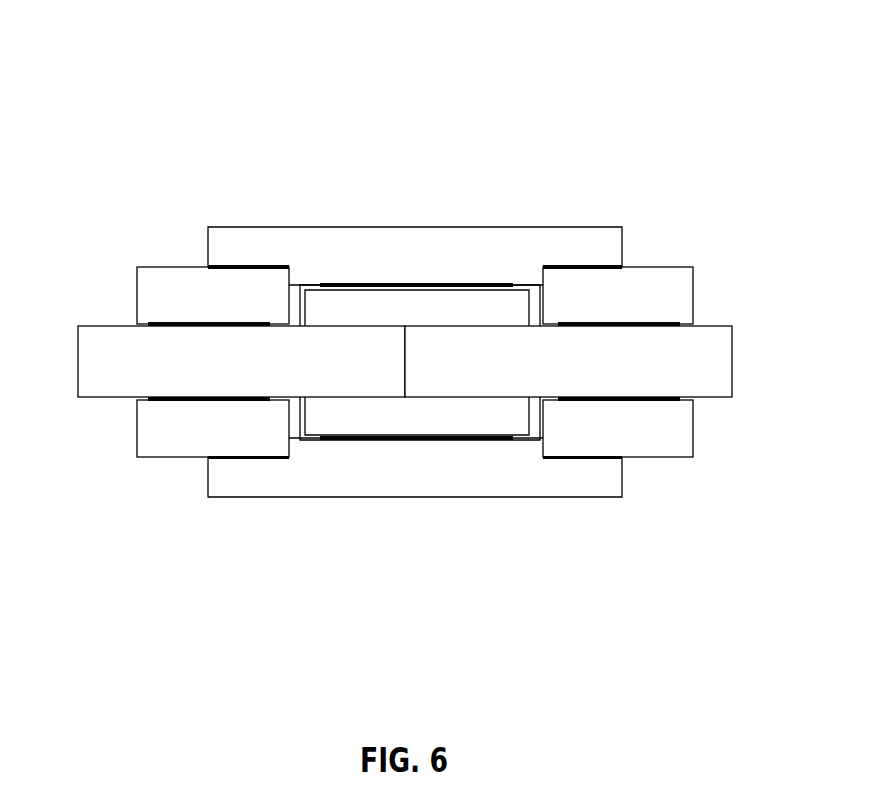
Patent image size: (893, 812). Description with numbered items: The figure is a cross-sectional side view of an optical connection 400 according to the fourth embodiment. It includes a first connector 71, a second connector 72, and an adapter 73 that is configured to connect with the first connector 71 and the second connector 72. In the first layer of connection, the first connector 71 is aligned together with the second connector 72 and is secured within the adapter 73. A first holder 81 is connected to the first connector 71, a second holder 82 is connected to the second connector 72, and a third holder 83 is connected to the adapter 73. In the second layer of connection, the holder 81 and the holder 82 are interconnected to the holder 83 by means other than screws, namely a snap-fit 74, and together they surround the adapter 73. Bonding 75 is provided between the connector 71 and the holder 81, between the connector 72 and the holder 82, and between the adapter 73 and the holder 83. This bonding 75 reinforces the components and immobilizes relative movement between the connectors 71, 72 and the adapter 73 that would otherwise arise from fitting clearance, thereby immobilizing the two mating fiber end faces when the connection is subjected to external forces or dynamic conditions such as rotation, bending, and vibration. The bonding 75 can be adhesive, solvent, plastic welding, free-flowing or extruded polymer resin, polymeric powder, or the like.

The optical connection 400 is at (408, 81).
The first connector 71 is at (241, 361).
The second connector 72 is at (568, 361).
The adapter 73 is at (420, 361).
The snap-fit 74 is at (243, 265).
The bonding 75 is at (183, 403).
The first holder 81 is at (213, 362).
The second holder 82 is at (618, 362).
The third holder 83 is at (415, 362).